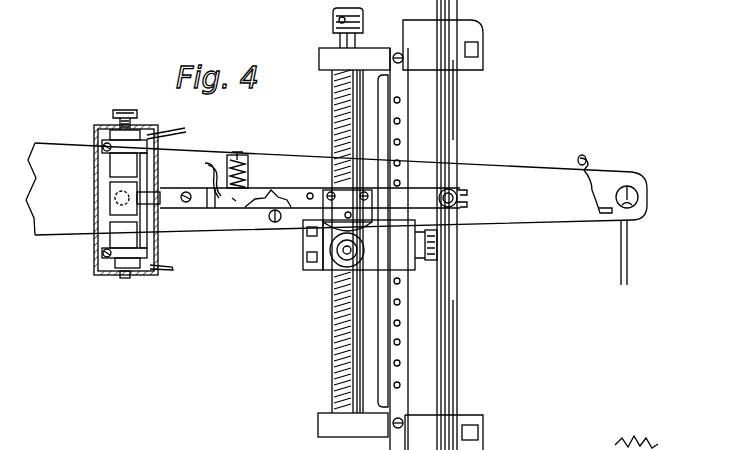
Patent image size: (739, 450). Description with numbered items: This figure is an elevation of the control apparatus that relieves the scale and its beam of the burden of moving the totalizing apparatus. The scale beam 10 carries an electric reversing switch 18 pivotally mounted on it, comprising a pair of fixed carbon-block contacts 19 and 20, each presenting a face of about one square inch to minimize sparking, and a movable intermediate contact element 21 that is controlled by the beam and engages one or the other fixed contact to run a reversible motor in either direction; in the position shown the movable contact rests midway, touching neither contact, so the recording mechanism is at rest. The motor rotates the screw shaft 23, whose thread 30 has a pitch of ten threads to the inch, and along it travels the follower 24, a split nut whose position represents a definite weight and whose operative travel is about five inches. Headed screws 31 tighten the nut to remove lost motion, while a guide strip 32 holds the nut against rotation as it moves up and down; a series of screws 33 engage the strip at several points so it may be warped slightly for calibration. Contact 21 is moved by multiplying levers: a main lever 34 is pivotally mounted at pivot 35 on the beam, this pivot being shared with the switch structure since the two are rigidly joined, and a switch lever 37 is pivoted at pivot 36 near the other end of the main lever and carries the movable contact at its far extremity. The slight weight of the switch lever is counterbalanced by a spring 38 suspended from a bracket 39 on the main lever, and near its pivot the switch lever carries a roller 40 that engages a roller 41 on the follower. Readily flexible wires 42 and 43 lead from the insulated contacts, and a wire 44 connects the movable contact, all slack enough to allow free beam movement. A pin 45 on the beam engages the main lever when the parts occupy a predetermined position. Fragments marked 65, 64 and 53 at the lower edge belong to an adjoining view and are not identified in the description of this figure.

The scale beam 10 is at (553, 228).
The electric reversing switch 18 is at (96, 161).
The contact 19 is at (114, 230).
The contact 20 is at (112, 170).
The movable intermediate contact element 21 is at (115, 196).
The screw shaft 23 is at (340, 40).
The follower 24 is at (410, 270).
The thread 30 is at (338, 344).
The headed screws 31 is at (305, 240).
The guide strip 32 is at (385, 118).
The screws 33 is at (401, 341).
The main lever 34 is at (268, 210).
The pivot 35 is at (114, 208).
The pivot 36 is at (463, 198).
The switch lever 37 is at (235, 205).
The spring 38 is at (244, 170).
The bracket 39 is at (243, 152).
The roller 40 is at (358, 234).
The roller 41 is at (360, 258).
The wire 42 is at (173, 270).
The wire 43 is at (205, 112).
The wire 44 is at (208, 168).
The pin 45 is at (277, 208).
The element 53 is at (692, 439).
The element 64 is at (615, 441).
The element 65 is at (550, 445).